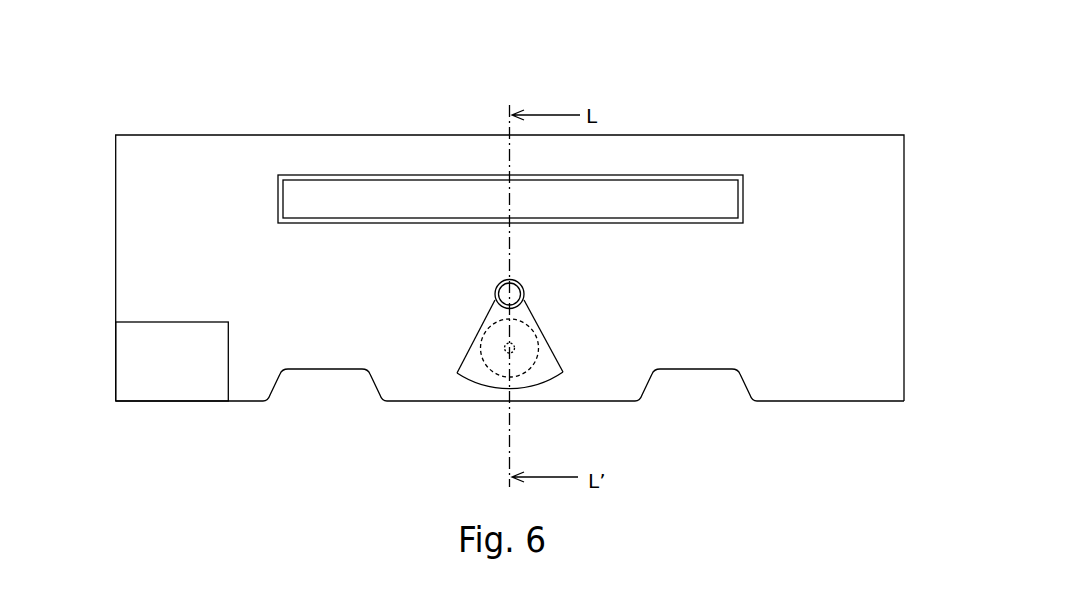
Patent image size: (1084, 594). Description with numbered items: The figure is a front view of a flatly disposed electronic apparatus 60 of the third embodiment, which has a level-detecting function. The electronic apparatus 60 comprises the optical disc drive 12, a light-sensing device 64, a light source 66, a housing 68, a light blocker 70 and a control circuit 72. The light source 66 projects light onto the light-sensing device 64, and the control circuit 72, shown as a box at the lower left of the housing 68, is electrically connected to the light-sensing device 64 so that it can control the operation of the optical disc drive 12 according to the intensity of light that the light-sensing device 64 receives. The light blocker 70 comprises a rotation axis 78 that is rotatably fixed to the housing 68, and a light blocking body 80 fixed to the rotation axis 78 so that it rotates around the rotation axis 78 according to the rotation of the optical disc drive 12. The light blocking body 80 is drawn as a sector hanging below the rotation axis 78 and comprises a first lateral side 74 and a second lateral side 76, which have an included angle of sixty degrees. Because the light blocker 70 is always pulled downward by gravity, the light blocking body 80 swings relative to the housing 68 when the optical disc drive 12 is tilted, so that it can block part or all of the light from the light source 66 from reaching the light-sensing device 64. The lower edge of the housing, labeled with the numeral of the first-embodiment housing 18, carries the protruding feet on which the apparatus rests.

The electronic apparatus 60 is at (477, 243).
The optical disc drive 12 is at (510, 288).
The housing 18 is at (403, 401).
The housing 68 is at (872, 247).
The control circuit 72 is at (168, 390).
The rotation axis 78 is at (513, 297).
The first lateral side 74 is at (457, 365).
The second lateral side 76 is at (557, 352).
The light blocker 70 is at (480, 383).
The light-sensing device 64 is at (533, 328).
The light source 66 is at (505, 345).
The light blocking body 80 is at (553, 385).